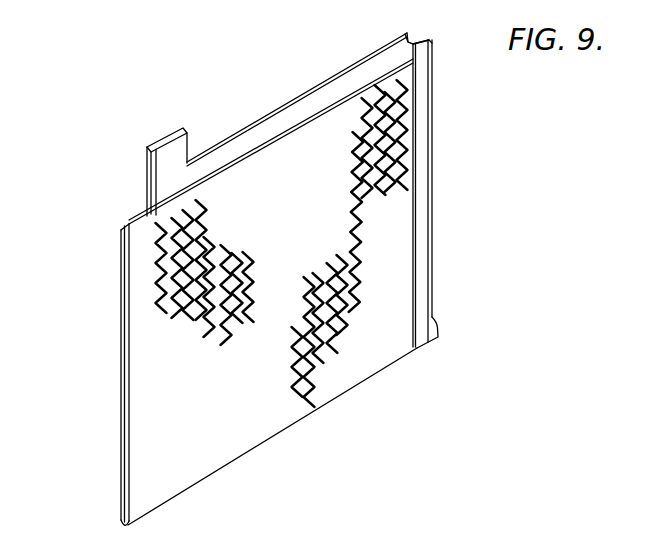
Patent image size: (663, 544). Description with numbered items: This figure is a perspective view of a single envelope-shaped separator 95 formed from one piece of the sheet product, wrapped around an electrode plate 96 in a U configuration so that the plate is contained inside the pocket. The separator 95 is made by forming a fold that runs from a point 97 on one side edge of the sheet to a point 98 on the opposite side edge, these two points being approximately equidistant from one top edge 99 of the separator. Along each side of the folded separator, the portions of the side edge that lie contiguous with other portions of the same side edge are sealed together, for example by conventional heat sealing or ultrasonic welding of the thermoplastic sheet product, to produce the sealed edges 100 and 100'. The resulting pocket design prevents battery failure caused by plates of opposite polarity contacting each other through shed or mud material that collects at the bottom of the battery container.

The separator 95 is at (447, 254).
The electrode plate 96 is at (265, 117).
The point 97 is at (440, 323).
The point 98 is at (118, 522).
The top edge 99 is at (414, 44).
The sealed edge 100 is at (91, 373).
The sealed edge 100' is at (455, 193).